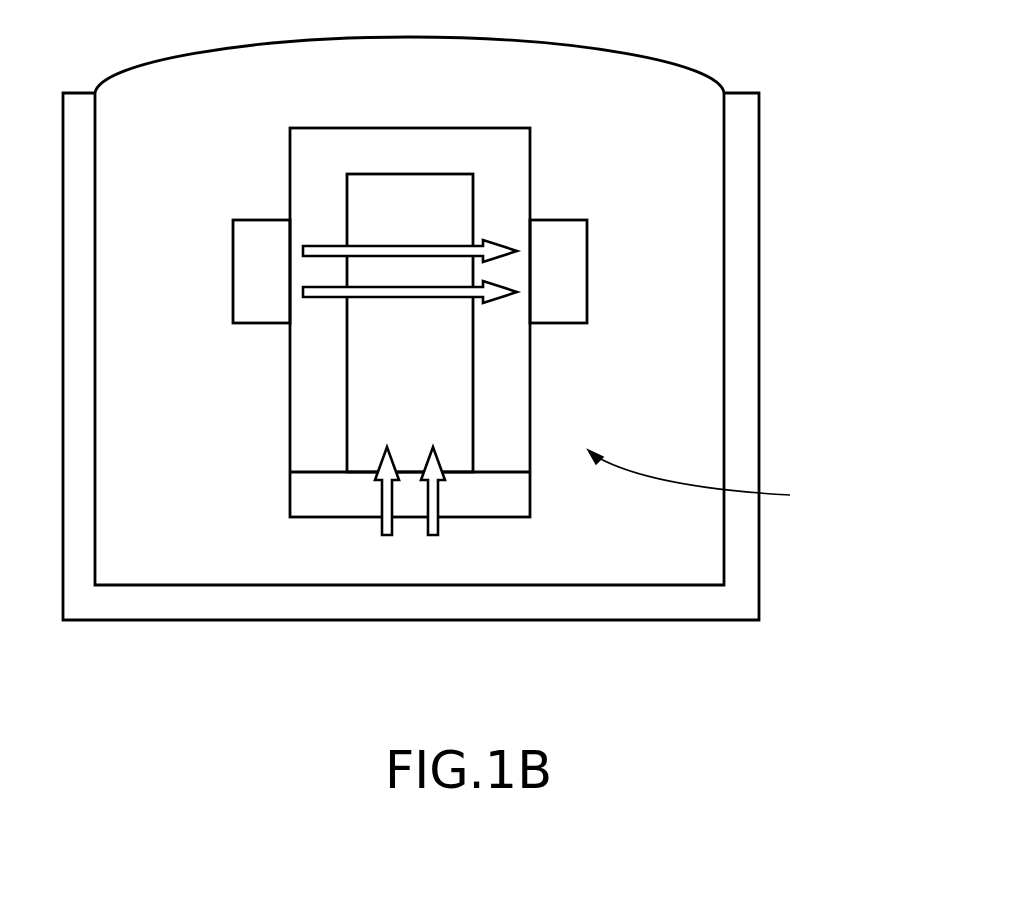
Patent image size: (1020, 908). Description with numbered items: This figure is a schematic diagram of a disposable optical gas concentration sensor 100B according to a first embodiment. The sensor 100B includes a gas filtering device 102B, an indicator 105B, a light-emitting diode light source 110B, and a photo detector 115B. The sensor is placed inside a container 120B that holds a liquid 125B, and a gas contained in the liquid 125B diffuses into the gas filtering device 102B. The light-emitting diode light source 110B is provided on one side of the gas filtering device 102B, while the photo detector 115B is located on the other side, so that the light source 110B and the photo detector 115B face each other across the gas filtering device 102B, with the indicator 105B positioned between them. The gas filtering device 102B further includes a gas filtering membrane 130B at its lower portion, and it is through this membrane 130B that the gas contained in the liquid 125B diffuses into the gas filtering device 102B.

The disposable optical gas concentration sensor 100B is at (415, 317).
The gas filtering device 102B is at (302, 392).
The indicator 105B is at (393, 197).
The light-emitting diode light source 110B is at (256, 278).
The photo detector 115B is at (570, 295).
The container 120B is at (667, 608).
The liquid 125B is at (716, 479).
The gas filtering membrane 130B is at (302, 495).